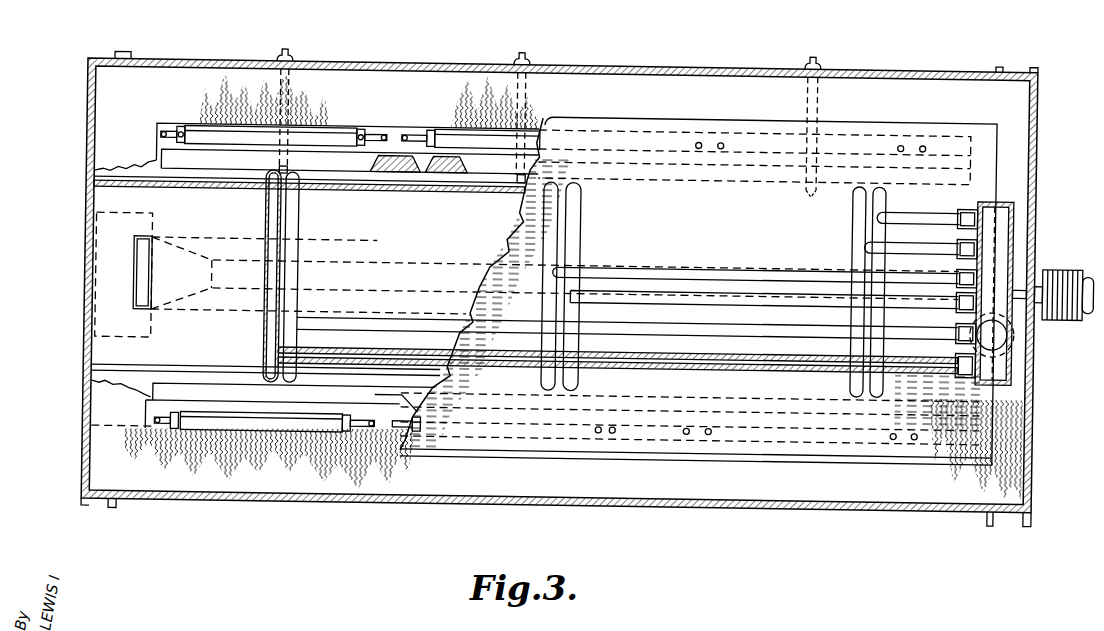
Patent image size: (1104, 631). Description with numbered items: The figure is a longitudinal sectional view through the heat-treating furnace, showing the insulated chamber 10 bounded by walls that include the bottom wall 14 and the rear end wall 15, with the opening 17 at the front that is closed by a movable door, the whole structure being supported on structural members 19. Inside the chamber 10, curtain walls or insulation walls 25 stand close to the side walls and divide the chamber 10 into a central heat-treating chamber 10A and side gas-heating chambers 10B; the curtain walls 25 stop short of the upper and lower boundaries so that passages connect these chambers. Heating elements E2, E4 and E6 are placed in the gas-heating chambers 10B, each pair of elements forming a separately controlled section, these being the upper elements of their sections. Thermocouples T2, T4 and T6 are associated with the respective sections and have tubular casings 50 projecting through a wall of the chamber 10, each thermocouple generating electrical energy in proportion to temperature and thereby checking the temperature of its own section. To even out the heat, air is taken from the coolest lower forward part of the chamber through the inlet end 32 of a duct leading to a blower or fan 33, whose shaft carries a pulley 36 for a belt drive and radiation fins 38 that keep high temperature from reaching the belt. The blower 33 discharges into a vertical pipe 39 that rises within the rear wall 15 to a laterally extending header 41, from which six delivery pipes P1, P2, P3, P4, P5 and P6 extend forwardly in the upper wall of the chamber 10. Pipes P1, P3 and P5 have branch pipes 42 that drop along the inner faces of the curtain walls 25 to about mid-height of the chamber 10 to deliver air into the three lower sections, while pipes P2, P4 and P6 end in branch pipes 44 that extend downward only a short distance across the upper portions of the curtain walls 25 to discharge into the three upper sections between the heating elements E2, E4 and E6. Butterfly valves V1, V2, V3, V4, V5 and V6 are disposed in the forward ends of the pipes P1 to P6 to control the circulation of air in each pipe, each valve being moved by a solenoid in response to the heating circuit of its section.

The rear end wall 15 is at (1041, 103).
The structural member 19 is at (118, 49).
The opening 17 is at (107, 200).
The gas-heating chamber 10B is at (338, 144).
The heat-treating chamber 10A is at (338, 371).
The chamber 10 is at (391, 172).
The bottom wall 14 is at (112, 375).
The curtain wall 25 is at (202, 168).
The heating element E2 is at (226, 124).
The heating element E4 is at (460, 131).
The heating element E6 is at (761, 137).
The tubular casing 50 is at (293, 77).
The thermocouple T2 is at (288, 166).
The thermocouple T4 is at (519, 176).
The thermocouple T6 is at (832, 169).
The branch pipe 44 is at (268, 207).
The branch pipe 42 is at (301, 204).
The inlet end 32 is at (145, 269).
The delivery pipe P1 is at (437, 313).
The delivery pipe P2 is at (382, 343).
The delivery pipe P3 is at (707, 283).
The delivery pipe P4 is at (650, 259).
The delivery pipe P5 is at (902, 199).
The delivery pipe P6 is at (871, 236).
The valve V1 is at (967, 330).
The valve V2 is at (982, 364).
The valve V3 is at (961, 294).
The valve V4 is at (960, 254).
The valve V5 is at (972, 203).
The butterfly valve V6 is at (963, 224).
The header 41 is at (1006, 209).
The blower 33 is at (980, 239).
The vertical pipe 39 is at (1004, 319).
The radiation fins 38 is at (1066, 255).
The pulley 36 is at (1091, 298).